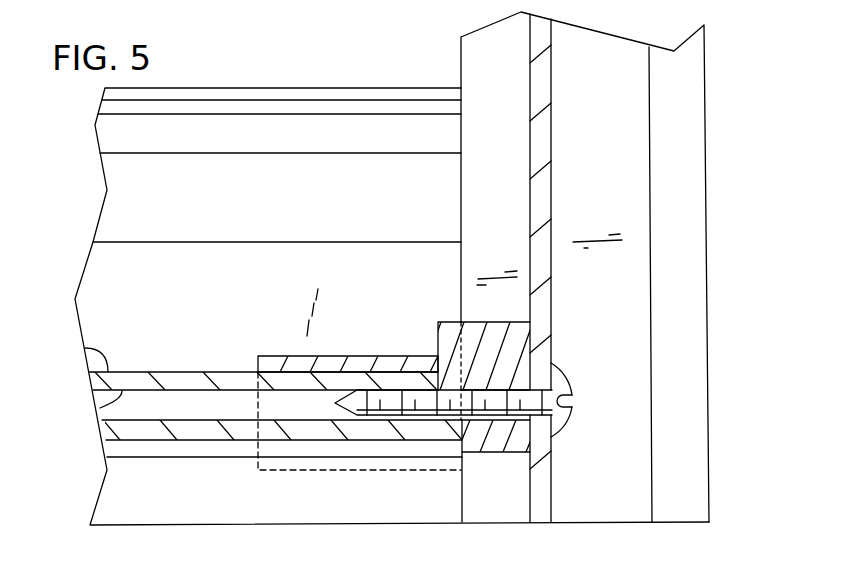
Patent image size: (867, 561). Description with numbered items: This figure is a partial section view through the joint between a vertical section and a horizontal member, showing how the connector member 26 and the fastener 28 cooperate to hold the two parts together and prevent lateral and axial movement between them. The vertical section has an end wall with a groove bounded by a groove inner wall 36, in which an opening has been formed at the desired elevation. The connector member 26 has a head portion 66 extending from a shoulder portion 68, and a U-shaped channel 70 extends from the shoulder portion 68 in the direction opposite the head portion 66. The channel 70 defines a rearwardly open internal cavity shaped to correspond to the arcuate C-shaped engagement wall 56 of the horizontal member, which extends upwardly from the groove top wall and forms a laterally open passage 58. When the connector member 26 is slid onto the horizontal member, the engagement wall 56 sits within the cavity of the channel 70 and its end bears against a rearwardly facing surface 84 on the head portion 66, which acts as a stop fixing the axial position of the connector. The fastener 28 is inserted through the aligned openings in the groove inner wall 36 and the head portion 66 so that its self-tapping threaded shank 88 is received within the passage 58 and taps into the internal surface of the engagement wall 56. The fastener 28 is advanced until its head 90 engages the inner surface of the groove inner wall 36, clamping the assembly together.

The connector member 26 is at (358, 354).
The fastener 28 is at (565, 360).
The groove inner wall 36 is at (551, 307).
The C-shaped engagement wall 56 is at (85, 347).
The laterally open passage 58 is at (100, 408).
The head portion 66 is at (500, 320).
The shoulder portion 68 is at (450, 320).
The U-shaped channel 70 is at (288, 355).
The rearwardly facing surface 84 is at (457, 428).
The threaded shank 88 is at (388, 413).
The head 90 is at (573, 384).